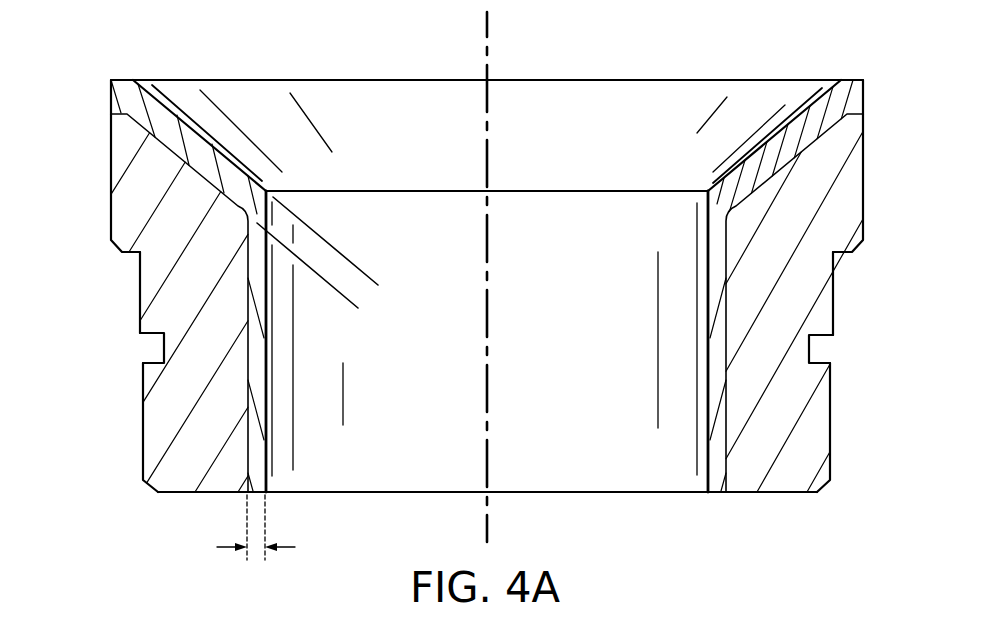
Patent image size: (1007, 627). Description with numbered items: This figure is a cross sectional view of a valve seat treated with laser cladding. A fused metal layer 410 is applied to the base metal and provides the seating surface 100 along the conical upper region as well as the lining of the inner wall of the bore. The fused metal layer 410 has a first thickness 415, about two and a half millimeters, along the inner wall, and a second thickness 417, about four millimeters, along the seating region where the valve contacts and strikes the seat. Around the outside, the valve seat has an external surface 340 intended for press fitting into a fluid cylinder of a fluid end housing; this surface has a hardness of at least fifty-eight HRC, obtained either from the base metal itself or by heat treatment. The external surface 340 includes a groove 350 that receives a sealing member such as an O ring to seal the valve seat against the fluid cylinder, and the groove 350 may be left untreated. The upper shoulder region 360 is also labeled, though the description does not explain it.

The seating surface 100 is at (412, 103).
The fused metal layer 410 is at (800, 125).
The upper shoulder 360 is at (111, 226).
The external surface 340 is at (140, 290).
The groove 350 is at (163, 348).
The second thickness 417 is at (388, 255).
The first thickness 415 is at (217, 547).